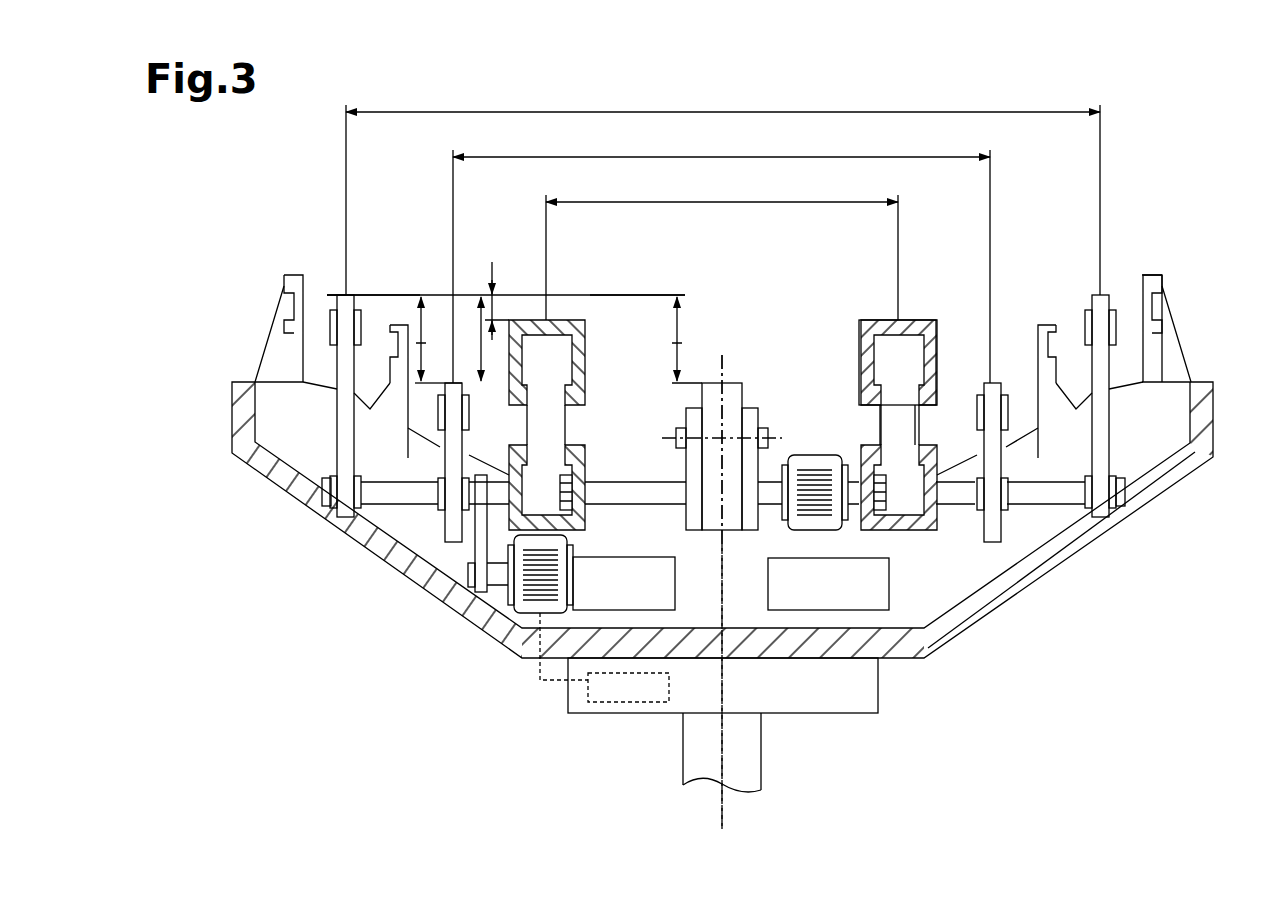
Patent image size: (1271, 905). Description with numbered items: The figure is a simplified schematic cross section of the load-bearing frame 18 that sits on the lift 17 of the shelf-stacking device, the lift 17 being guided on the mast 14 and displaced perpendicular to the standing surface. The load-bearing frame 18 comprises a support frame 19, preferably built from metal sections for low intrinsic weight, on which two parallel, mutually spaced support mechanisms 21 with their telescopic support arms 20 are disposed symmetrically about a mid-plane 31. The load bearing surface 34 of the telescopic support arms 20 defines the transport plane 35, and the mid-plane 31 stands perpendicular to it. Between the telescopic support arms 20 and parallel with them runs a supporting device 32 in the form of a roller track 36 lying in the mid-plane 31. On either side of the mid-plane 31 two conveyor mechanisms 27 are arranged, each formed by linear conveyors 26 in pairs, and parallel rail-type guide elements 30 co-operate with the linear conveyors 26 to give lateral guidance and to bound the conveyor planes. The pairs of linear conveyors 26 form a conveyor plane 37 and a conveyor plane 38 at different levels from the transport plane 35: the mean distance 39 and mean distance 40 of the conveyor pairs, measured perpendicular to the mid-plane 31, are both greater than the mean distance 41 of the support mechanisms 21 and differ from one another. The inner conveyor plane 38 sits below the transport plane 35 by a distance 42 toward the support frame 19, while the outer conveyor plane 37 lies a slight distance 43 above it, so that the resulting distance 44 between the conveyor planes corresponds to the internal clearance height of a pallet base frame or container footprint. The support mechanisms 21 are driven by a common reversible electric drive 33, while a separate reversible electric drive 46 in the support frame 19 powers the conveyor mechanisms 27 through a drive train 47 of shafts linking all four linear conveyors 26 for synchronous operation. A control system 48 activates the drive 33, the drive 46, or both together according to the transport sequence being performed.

The mast 14 is at (752, 757).
The lift 17 is at (857, 700).
The load-bearing frame 18 is at (1194, 190).
The support frame 19 is at (940, 597).
The telescopic support arms 20 is at (930, 320).
The support mechanisms 21 is at (529, 274).
The linear conveyors 26 is at (343, 452).
The conveyor mechanisms 27 is at (423, 281).
The rail-type guide elements 30 is at (290, 278).
The mid-plane 31 is at (722, 818).
The supporting device 32 is at (749, 362).
The drive 33 is at (834, 510).
The load bearing surface 34 is at (893, 316).
The transport plane 35 is at (606, 315).
The roller track 36 is at (738, 402).
The conveyor plane 37 is at (333, 285).
The conveyor plane 38 is at (452, 378).
The mean distance 39 is at (715, 103).
The mean distance 40 is at (715, 148).
The mean distance 41 is at (715, 193).
The distance 42 is at (488, 270).
The distance 43 is at (448, 340).
The distance 44 is at (680, 343).
The drive 46 is at (532, 598).
The drive train 47 is at (372, 496).
The control system 48 is at (617, 692).